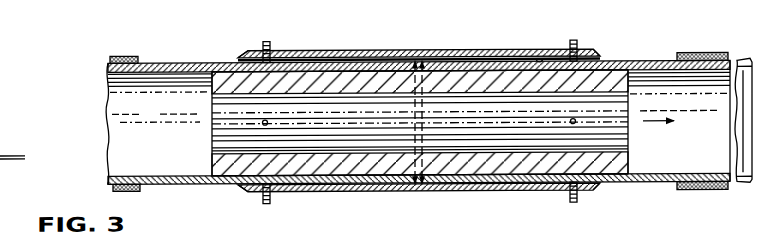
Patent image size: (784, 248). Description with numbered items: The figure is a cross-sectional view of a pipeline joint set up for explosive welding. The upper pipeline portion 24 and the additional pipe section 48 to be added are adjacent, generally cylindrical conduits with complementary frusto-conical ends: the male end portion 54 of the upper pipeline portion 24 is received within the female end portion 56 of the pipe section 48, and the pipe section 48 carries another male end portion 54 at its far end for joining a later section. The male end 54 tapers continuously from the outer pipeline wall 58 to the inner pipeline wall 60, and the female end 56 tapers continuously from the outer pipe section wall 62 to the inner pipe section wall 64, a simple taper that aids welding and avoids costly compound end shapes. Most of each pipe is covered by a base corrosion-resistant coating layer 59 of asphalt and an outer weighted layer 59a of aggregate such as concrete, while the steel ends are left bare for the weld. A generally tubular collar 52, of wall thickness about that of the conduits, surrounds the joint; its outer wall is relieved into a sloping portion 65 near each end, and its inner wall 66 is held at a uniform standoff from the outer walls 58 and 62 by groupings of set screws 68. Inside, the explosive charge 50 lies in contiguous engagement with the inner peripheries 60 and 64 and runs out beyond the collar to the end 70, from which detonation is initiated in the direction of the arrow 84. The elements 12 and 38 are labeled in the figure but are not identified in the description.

The tubular inner member 12 is at (614, 174).
The upper pipeline portion 24 is at (174, 60).
The conduit 38 is at (3, 143).
The additional pipe section 48 is at (666, 58).
The explosive charge 50 is at (209, 98).
The collar 52 is at (503, 42).
The male end portion 54 is at (421, 62).
The female end portion 56 is at (401, 192).
The outer pipeline wall 58 is at (389, 61).
The base corrosion-resistant coating layer 59 is at (108, 63).
The outer weighted continuous layer 59a is at (116, 54).
The inner pipeline wall 60 is at (334, 70).
The outer pipe section wall 62 is at (494, 186).
The inner pipe section wall 64 is at (562, 172).
The sloping portion 65 is at (234, 190).
The inner wall of the collar 66 is at (544, 58).
The set screws 68 is at (269, 48).
The end of the explosive charge 70 is at (226, 80).
The arrow 84 is at (643, 123).